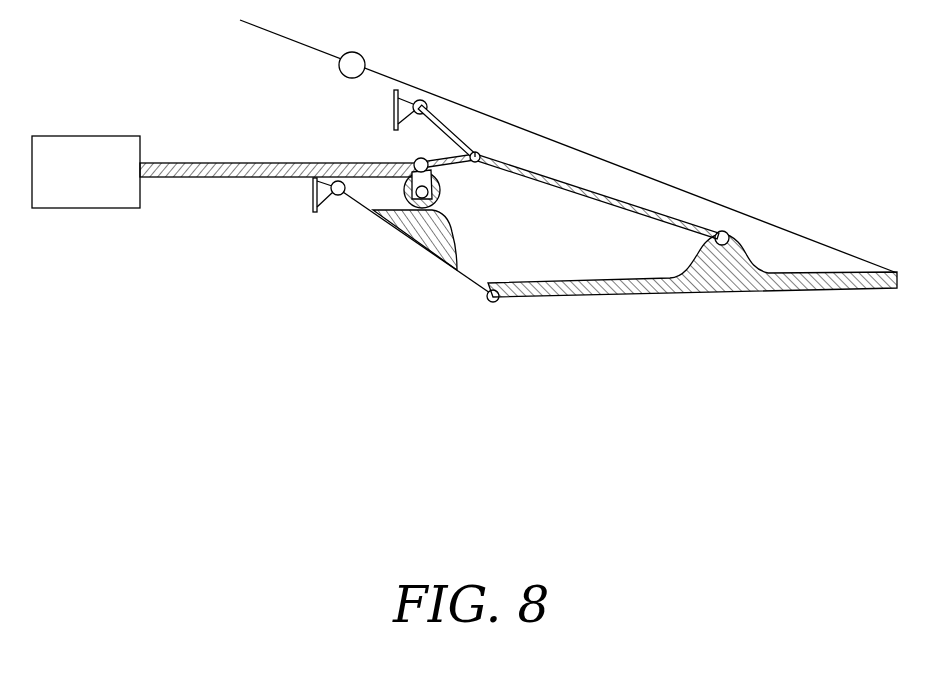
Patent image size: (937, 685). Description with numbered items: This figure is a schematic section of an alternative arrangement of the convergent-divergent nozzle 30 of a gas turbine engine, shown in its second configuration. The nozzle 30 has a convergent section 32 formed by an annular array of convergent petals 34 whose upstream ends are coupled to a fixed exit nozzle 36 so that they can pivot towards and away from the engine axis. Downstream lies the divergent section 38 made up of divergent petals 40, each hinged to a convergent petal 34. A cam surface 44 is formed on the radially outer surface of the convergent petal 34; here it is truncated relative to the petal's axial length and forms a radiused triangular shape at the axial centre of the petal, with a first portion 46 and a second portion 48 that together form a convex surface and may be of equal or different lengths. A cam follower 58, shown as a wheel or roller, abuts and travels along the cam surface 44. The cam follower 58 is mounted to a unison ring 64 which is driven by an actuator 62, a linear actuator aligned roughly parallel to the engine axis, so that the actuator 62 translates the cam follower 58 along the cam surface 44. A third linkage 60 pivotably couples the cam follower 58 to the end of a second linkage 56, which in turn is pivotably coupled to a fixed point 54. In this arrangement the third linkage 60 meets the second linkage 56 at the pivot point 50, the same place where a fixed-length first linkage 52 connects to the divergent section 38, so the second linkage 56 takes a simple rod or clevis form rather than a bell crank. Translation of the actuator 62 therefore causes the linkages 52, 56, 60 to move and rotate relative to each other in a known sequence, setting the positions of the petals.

The nozzle 30 is at (112, 47).
The convergent section 32 is at (345, 272).
The convergent petals 34 is at (462, 285).
The fixed exit nozzle 36 is at (313, 186).
The divergent section 38 is at (668, 332).
The divergent petals 40 is at (808, 283).
The cam surface 44 is at (460, 268).
The first portion 46 is at (388, 208).
The second portion 48 is at (457, 238).
The pivot point 50 is at (477, 150).
The first linkage 52 is at (670, 215).
The fixed point 54 is at (403, 101).
The second linkage 56 is at (448, 128).
The cam follower 58 is at (441, 196).
The third linkage 60 is at (443, 166).
The actuator 62 is at (82, 202).
The unison ring 64 is at (176, 178).